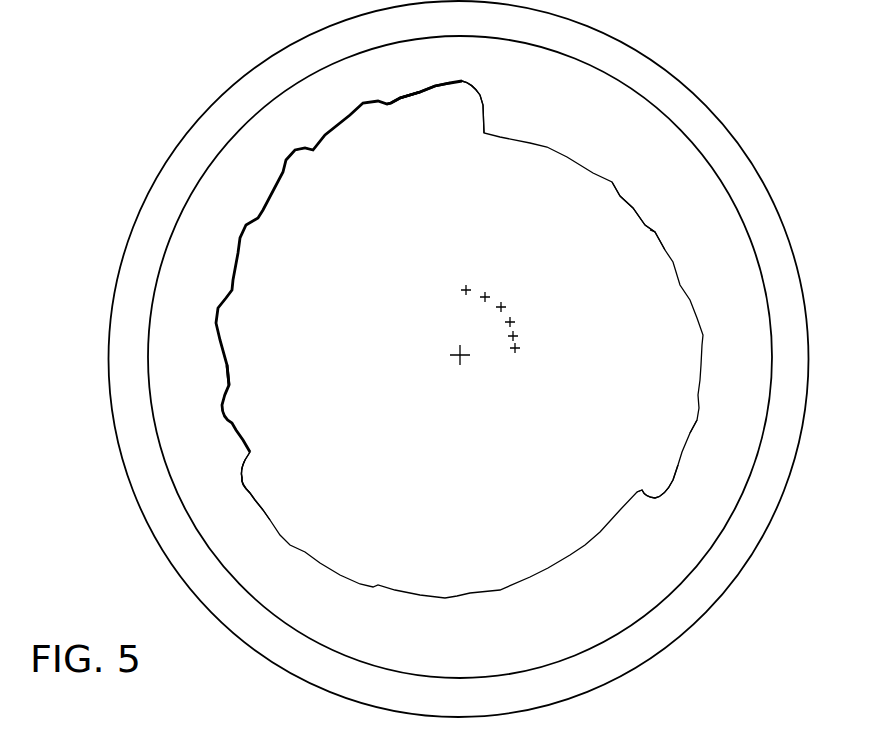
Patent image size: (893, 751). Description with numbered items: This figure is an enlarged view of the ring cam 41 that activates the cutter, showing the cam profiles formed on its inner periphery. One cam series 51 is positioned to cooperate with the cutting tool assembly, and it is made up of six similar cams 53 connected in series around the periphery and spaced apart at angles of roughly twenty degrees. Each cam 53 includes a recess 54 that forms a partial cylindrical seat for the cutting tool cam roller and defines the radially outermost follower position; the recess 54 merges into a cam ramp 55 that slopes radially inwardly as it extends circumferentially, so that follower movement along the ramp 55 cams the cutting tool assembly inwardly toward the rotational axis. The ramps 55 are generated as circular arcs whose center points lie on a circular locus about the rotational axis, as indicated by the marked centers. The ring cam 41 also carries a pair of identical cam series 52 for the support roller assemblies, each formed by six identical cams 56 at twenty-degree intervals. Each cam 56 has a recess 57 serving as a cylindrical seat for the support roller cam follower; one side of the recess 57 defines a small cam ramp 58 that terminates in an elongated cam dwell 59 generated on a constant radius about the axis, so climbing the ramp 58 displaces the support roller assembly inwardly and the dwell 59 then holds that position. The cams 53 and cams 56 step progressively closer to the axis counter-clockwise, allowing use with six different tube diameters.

The ring cam 41 is at (168, 311).
The cam series 51 is at (278, 135).
The cam series 52 is at (716, 367).
The cam 53 is at (428, 70).
The recess 54 is at (472, 85).
The cam ramp 55 is at (405, 102).
The cam 56 is at (637, 209).
The recess 57 is at (652, 236).
The cam ramp 58 is at (650, 230).
The cam dwell 59 is at (620, 196).